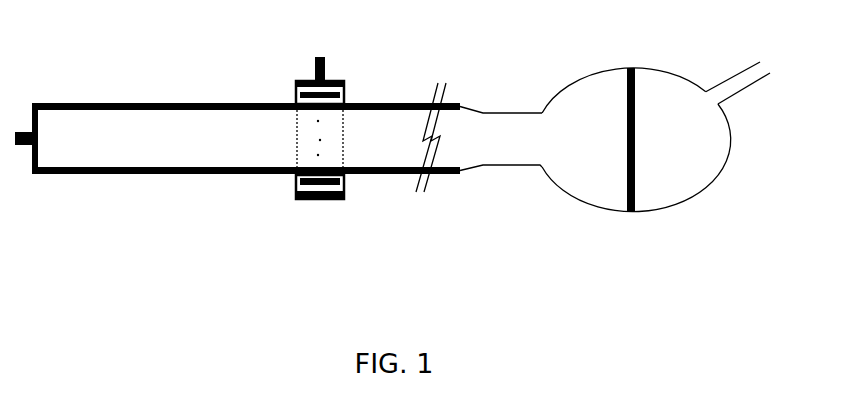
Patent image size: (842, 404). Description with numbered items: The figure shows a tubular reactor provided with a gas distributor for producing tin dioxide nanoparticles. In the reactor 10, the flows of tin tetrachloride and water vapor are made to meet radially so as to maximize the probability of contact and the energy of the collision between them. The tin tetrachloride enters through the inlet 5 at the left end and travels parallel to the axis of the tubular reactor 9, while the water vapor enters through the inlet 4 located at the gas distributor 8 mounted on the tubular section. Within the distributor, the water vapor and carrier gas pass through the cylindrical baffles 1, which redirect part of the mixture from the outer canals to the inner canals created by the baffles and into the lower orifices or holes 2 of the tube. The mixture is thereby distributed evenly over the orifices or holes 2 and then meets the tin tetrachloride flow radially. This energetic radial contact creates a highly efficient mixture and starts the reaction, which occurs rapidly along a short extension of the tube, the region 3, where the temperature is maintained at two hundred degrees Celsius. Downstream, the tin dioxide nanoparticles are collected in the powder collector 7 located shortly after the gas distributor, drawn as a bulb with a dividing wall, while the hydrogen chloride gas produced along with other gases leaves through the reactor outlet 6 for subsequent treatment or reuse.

The cylindrical baffles 1 is at (295, 90).
The orifices or holes 2 is at (320, 138).
The reaction region 3 is at (287, 138).
The inlet 4 is at (319, 57).
The inlet 5 is at (23, 129).
The reactor outlet 6 is at (738, 77).
The powder collector 7 is at (636, 140).
The gas distributor 8 is at (318, 200).
The tubular reactor 9 is at (124, 133).
The reactor 10 is at (197, 173).